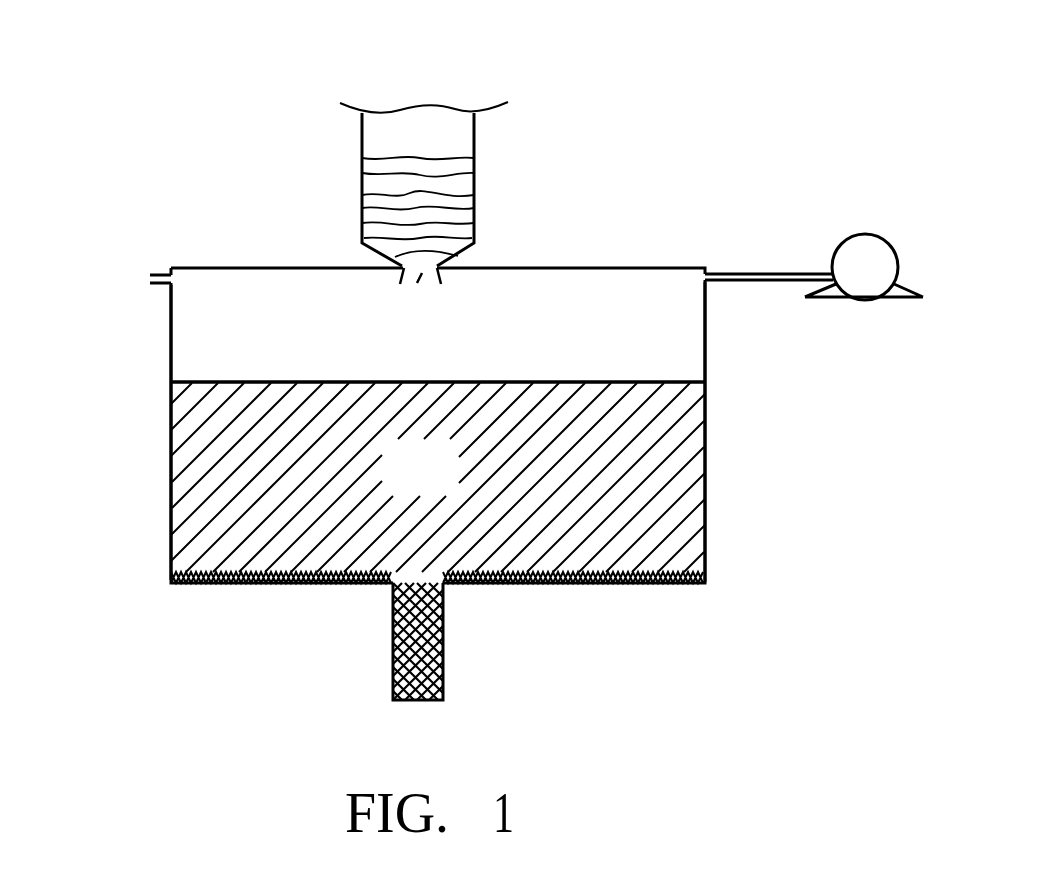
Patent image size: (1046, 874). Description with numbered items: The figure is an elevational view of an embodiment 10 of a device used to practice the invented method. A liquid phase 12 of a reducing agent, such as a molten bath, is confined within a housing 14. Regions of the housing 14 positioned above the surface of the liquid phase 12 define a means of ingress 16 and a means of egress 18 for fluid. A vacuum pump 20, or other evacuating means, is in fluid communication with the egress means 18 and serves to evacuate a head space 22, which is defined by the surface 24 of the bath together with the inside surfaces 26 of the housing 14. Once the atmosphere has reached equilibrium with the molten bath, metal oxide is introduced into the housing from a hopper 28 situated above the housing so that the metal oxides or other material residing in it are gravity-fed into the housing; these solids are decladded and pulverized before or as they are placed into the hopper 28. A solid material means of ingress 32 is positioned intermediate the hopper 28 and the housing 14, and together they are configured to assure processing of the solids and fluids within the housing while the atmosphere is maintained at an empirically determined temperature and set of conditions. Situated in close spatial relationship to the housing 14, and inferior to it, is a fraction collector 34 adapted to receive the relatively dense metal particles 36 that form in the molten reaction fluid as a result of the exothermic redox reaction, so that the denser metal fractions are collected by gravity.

The embodiment 10 is at (722, 105).
The liquid phase 12 is at (440, 478).
The housing 14 is at (705, 540).
The means of ingress 16 is at (150, 280).
The means of egress 18 is at (757, 274).
The vacuum pump 20 is at (865, 258).
The head space 22 is at (440, 348).
The surface of the bath 24 is at (705, 345).
The inside surfaces of the housing 26 is at (171, 330).
The hopper 28 is at (474, 141).
The solid material means of ingress 32 is at (423, 273).
The fraction collector 34 is at (392, 673).
The metal particles 36 is at (296, 584).